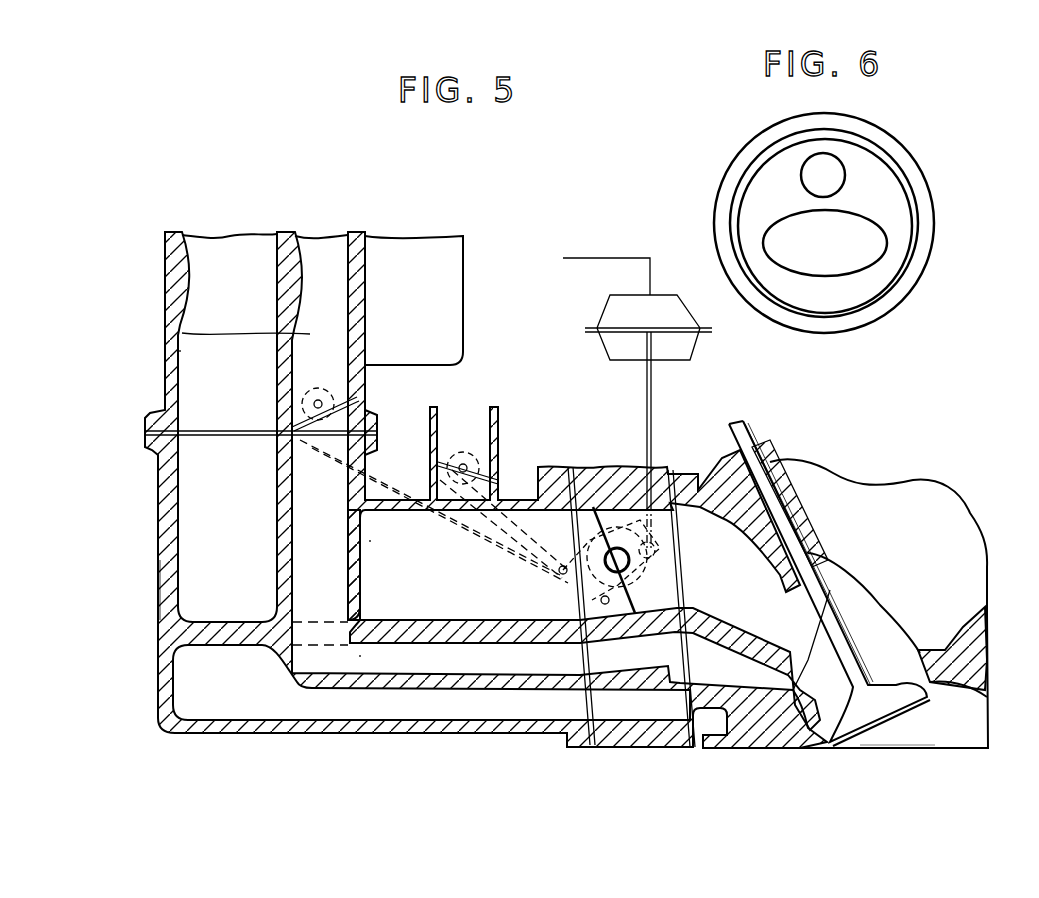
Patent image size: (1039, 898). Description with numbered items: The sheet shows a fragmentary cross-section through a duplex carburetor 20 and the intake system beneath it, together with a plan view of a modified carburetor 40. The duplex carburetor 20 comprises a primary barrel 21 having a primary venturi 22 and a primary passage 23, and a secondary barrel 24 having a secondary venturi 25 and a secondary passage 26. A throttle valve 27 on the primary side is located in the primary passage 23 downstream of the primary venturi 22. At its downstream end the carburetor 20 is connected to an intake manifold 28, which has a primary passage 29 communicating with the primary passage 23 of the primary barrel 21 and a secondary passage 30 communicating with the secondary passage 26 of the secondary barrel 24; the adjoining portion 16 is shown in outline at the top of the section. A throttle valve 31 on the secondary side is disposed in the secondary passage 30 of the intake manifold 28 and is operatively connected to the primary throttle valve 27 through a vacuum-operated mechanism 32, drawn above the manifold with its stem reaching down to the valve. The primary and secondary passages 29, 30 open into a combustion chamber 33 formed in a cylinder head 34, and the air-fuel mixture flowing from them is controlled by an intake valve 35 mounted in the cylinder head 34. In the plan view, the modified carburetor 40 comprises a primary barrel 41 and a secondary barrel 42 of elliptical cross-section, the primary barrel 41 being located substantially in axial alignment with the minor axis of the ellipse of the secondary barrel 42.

In FIG. 5, the cylinder head block portion 16 is at (458, 236).
In FIG. 5, the duplex carburetor 20 is at (165, 236).
In FIG. 5, the primary barrel 21 is at (320, 233).
In FIG. 5, the primary venturi 22 is at (357, 262).
In FIG. 5, the primary passage 23 is at (182, 333).
In FIG. 5, the secondary barrel 24 is at (218, 232).
In FIG. 5, the secondary venturi 25 is at (176, 275).
In FIG. 5, the secondary passage 26 is at (196, 386).
In FIG. 5, the throttle valve 27 is at (365, 410).
In FIG. 5, the intake manifold 28 is at (160, 597).
In FIG. 5, the primary passage 29 is at (478, 663).
In FIG. 5, the secondary passage 30 is at (448, 607).
In FIG. 5, the throttle valve 31 is at (615, 468).
In FIG. 5, the vacuum-operated mechanism 32 is at (690, 365).
In FIG. 5, the combustion chamber 33 is at (935, 733).
In FIG. 5, the cylinder head 34 is at (975, 642).
In FIG. 5, the intake valve 35 is at (862, 688).
In FIG. 6, the modified carburetor 40 is at (906, 139).
In FIG. 6, the primary barrel 41 is at (856, 180).
In FIG. 6, the secondary barrel 42 is at (876, 262).